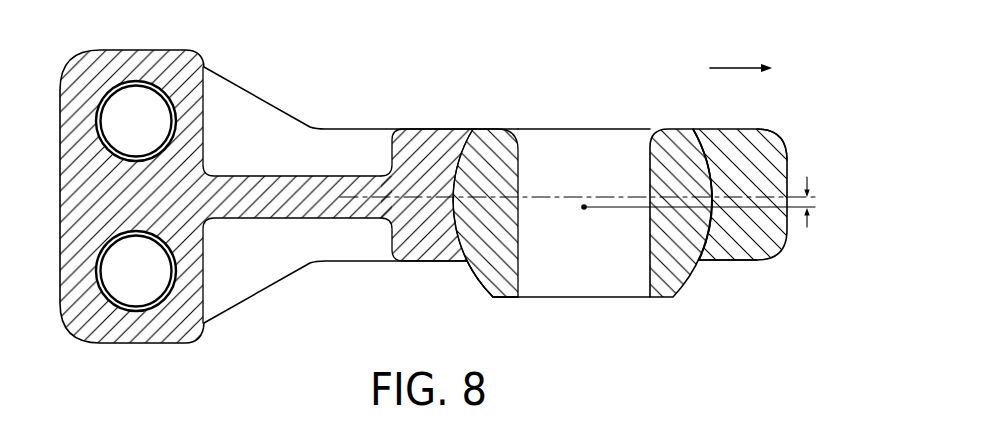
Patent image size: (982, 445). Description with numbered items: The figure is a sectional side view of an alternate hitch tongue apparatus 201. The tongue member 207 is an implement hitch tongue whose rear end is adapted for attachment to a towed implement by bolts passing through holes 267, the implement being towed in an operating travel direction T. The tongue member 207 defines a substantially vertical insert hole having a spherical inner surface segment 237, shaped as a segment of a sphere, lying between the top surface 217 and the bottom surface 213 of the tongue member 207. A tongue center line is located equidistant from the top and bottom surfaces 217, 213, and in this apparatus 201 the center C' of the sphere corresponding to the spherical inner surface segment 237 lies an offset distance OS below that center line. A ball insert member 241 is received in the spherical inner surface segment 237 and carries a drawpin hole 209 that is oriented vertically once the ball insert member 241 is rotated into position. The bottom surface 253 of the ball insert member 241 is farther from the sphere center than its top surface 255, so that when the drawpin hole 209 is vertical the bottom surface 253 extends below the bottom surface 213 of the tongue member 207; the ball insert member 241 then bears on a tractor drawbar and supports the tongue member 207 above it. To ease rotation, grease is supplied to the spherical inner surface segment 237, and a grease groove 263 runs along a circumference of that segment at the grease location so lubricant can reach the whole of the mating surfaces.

The hitch tongue apparatus 201 is at (588, 58).
The tongue member 207 is at (782, 142).
The drawpin hole 209 is at (590, 163).
The bottom surface 213 is at (733, 263).
The top surface 217 is at (725, 128).
The spherical inner surface segment 237 is at (712, 233).
The ball insert member 241 is at (690, 283).
The bottom surface 253 is at (505, 297).
The top surface 255 is at (490, 130).
The grease groove 263 is at (457, 168).
The holes 267 is at (140, 271).
The center of the sphere C' is at (676, 230).
The offset distance OS is at (807, 202).
The operating travel direction T is at (741, 52).